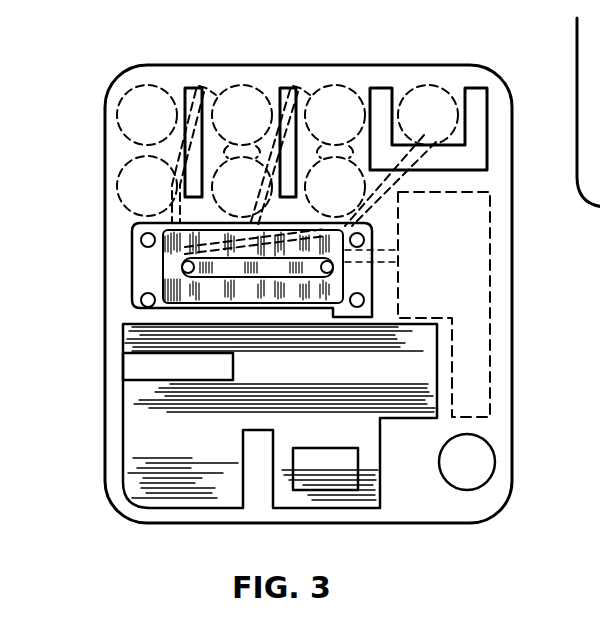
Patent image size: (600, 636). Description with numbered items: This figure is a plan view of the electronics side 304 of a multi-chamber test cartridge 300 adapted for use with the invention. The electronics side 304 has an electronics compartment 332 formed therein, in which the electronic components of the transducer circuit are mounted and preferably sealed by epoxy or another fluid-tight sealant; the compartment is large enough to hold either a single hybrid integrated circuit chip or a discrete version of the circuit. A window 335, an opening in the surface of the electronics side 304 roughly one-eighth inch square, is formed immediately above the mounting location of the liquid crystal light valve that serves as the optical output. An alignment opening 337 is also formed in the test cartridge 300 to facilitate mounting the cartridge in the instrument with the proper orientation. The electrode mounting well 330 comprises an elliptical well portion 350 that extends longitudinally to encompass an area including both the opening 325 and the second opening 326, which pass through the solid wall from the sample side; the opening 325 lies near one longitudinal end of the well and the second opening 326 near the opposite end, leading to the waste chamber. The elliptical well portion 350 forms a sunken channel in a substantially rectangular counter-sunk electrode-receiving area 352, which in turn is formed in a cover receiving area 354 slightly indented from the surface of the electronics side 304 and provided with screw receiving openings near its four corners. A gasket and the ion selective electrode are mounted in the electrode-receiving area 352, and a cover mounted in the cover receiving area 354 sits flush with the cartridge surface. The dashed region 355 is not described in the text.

The multi-chamber test cartridge 300 is at (143, 62).
The electronics side 304 is at (112, 420).
The opening 325 is at (182, 266).
The second opening 326 is at (333, 268).
The electrode mounting well 330 is at (128, 245).
The electronics compartment 332 is at (198, 490).
The window 335 is at (332, 478).
The alignment opening 337 is at (482, 461).
The elliptical well portion 350 is at (190, 273).
The electrode-receiving area 352 is at (333, 288).
The cover receiving area 354 is at (143, 278).
The dashed outline region 355 is at (367, 235).